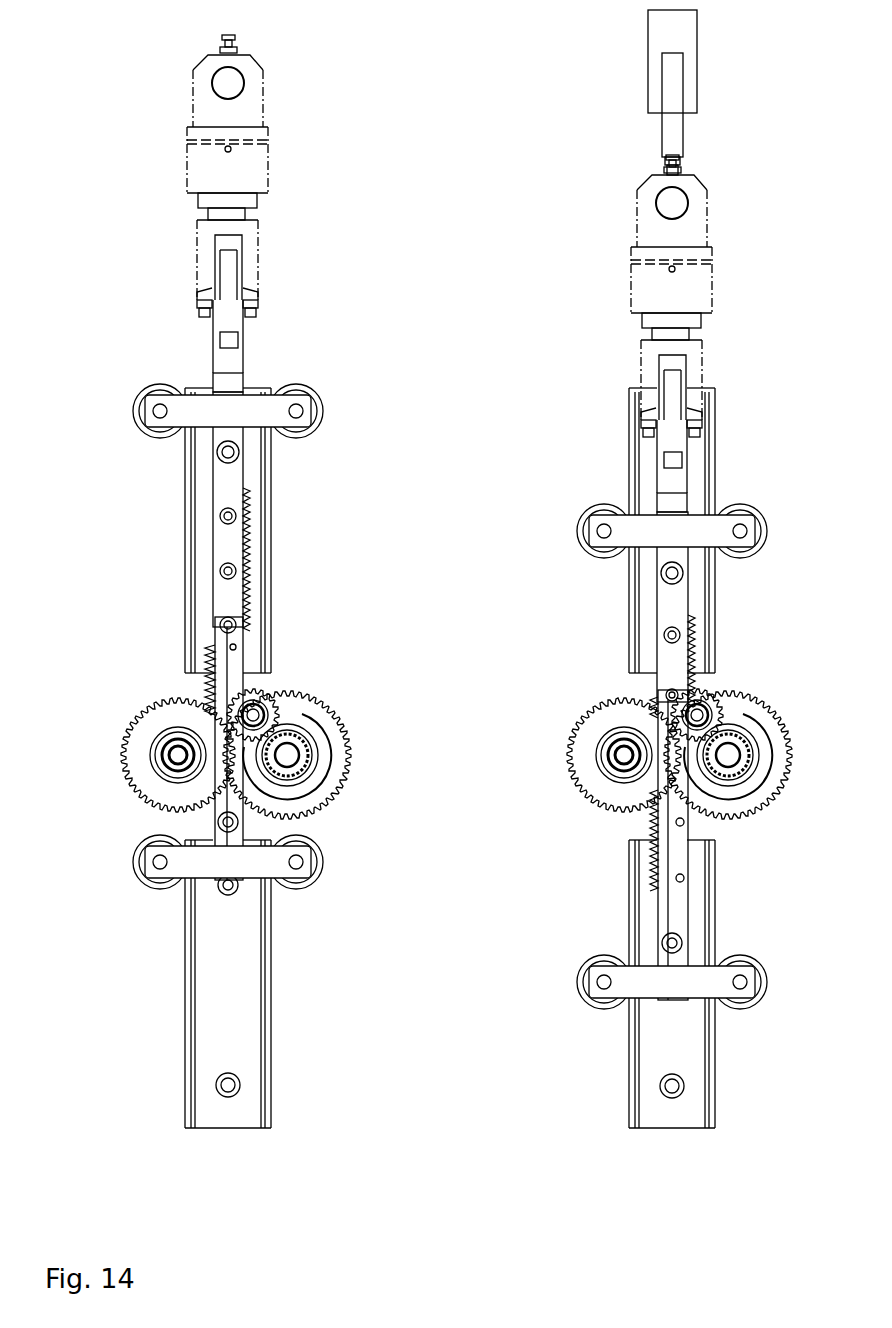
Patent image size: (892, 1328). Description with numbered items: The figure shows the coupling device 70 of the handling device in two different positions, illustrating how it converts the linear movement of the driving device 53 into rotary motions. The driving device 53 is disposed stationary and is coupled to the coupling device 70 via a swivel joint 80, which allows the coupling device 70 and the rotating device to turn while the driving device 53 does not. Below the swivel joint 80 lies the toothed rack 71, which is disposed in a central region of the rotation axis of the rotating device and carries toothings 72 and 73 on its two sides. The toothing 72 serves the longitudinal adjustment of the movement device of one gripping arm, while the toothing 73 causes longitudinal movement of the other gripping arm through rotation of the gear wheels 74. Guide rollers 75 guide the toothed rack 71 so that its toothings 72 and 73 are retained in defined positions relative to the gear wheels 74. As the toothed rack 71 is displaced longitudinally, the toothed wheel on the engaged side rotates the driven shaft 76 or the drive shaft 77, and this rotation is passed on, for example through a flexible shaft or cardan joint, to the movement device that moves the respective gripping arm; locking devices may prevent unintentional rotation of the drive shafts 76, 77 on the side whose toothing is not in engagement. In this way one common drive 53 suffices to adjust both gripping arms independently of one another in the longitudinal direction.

The driving device 53 is at (270, 125).
The coupling device 70 is at (300, 363).
The toothed rack 71 is at (228, 485).
The toothing 72 is at (255, 548).
The toothing 73 is at (205, 690).
The gear wheels 74 is at (325, 715).
The guide rollers 75 is at (320, 400).
The driven shaft 76 is at (170, 772).
The drive shaft 77 is at (300, 757).
The swivel joint 80 is at (272, 147).